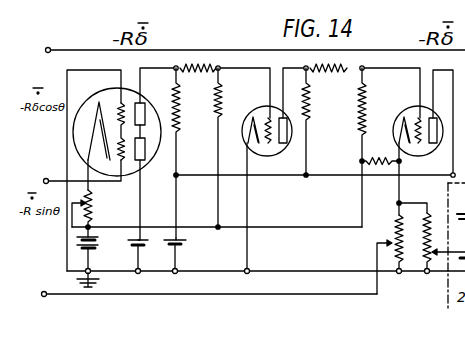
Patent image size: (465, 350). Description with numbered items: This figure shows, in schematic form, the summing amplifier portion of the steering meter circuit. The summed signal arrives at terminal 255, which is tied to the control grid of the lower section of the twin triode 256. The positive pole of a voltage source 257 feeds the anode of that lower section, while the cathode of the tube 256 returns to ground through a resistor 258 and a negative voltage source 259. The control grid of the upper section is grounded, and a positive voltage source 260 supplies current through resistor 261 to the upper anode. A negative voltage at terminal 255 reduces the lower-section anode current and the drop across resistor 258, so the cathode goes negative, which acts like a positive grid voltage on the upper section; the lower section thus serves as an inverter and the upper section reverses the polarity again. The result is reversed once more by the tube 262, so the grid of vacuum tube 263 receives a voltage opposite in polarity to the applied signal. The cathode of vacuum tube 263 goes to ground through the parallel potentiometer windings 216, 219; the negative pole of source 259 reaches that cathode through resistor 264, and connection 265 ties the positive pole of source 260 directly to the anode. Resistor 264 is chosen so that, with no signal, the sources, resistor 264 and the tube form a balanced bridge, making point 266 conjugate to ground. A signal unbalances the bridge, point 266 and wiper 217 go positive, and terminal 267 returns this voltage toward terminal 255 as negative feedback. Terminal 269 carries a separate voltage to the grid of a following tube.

The potentiometer winding 216 is at (389, 230).
The wiper 217 is at (378, 250).
The potentiometer winding 219 is at (425, 254).
The terminal 255 is at (47, 179).
The twin triode 256 is at (141, 166).
The voltage source 257 is at (147, 242).
The resistor 258 is at (93, 208).
The negative voltage source 259 is at (98, 246).
The positive voltage source 260 is at (186, 243).
The resistor 261 is at (183, 98).
The tube 262 is at (265, 152).
The vacuum tube 263 is at (414, 152).
The resistor 264 is at (364, 157).
The connection 265 is at (320, 177).
The point 266 is at (400, 203).
The terminal 267 is at (44, 295).
The terminal 269 is at (48, 48).